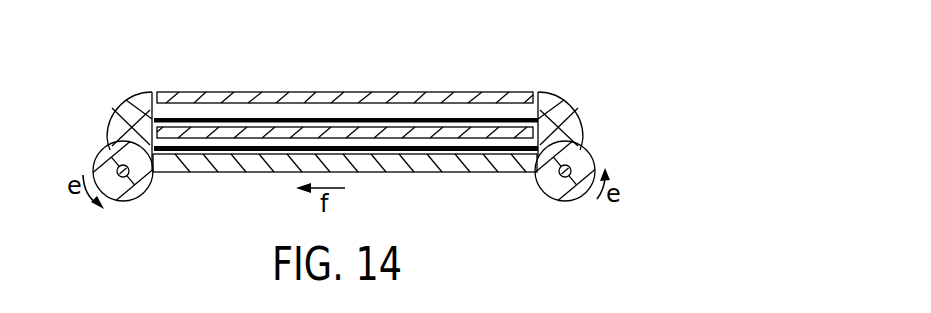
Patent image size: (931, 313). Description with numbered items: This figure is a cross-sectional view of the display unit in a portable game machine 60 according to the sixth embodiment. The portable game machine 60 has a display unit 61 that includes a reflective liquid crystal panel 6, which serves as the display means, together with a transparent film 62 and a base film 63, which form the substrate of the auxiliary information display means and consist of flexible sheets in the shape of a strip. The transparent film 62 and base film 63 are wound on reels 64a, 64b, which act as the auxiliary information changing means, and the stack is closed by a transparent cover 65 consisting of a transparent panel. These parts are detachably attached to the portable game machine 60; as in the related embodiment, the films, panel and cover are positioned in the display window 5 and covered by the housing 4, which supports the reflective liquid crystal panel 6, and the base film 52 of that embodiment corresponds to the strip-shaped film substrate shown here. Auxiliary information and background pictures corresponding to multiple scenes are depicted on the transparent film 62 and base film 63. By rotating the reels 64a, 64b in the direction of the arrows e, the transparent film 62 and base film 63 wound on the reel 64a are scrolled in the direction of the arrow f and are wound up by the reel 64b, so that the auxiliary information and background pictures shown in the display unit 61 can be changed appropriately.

The housing 4 is at (570, 128).
The display window 5 is at (324, 70).
The reflective liquid crystal panel 6 is at (555, 128).
The base film 52 is at (462, 150).
The portable game machine 60 is at (558, 66).
The display unit 61 is at (634, 108).
The transparent film 62 is at (186, 116).
The base film 63 is at (249, 140).
The reel 64a is at (557, 197).
The reel 64b is at (149, 187).
The transparent cover 65 is at (290, 105).